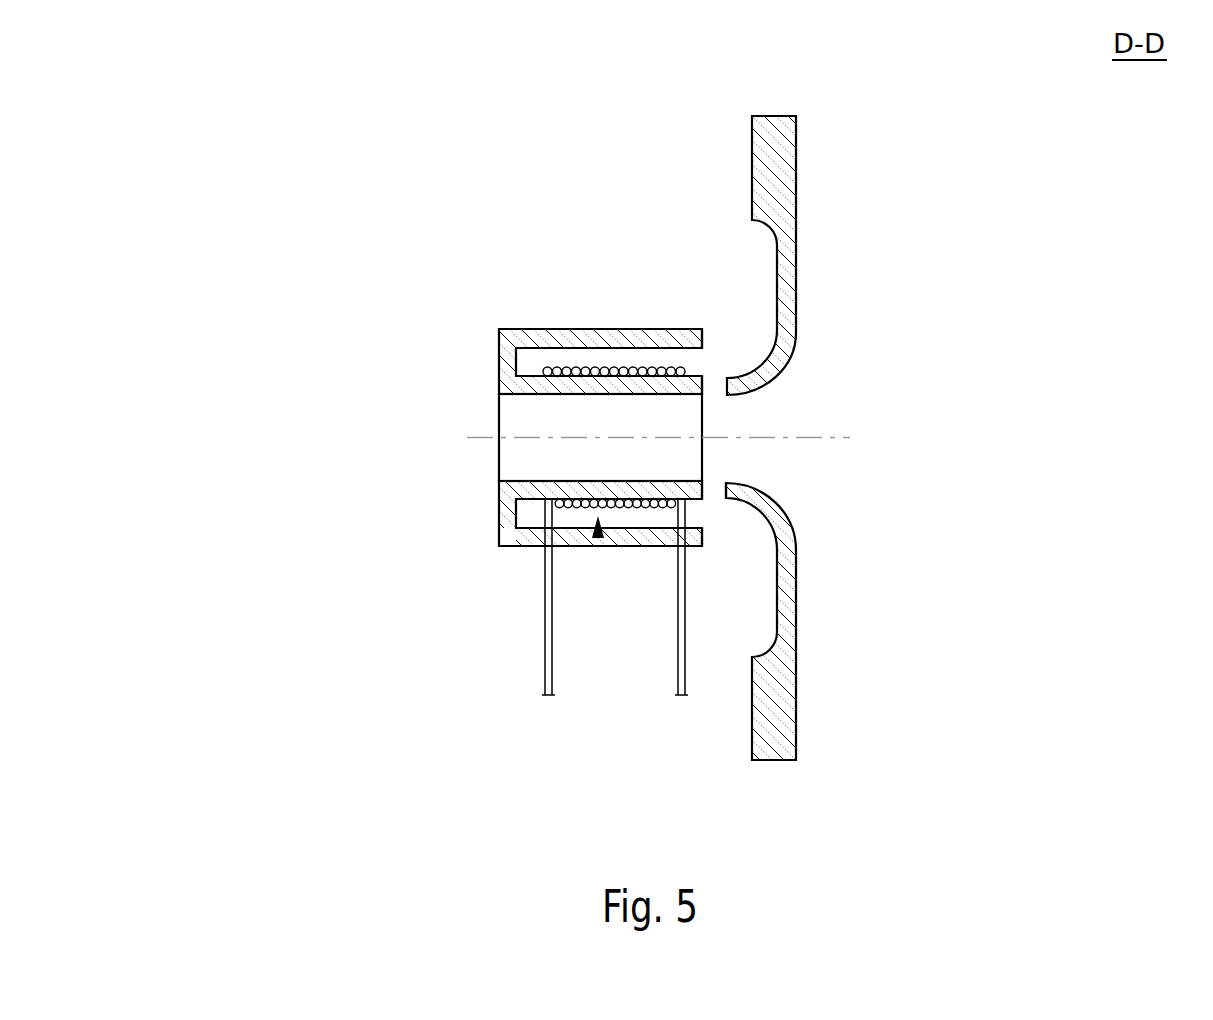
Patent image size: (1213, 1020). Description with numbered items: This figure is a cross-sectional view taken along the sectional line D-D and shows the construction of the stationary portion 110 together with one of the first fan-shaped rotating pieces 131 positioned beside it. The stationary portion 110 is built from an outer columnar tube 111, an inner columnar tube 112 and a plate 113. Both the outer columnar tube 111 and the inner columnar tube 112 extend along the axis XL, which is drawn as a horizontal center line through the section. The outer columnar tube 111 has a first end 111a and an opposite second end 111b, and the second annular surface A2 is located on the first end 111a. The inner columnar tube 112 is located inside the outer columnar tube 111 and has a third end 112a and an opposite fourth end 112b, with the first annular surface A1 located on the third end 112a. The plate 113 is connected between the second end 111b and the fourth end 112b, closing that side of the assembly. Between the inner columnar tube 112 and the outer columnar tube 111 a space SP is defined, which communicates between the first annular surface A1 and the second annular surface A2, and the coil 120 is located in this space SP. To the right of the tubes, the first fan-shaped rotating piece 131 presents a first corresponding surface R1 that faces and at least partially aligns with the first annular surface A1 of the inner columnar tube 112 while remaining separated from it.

The stationary portion 110 is at (243, 645).
The outer columnar tube 111 is at (590, 334).
The first end 111a is at (702, 340).
The second end 111b is at (517, 334).
The inner columnar tube 112 is at (527, 352).
The third end 112a is at (702, 380).
The fourth end 112b is at (518, 352).
The plate 113 is at (503, 364).
The coil 120 is at (640, 504).
The first fan-shaped rotating piece 131 is at (787, 682).
The space SP is at (597, 537).
The axis XL is at (840, 437).
The first annular surface A1 is at (702, 482).
The first corresponding surface R1 is at (725, 497).
The second annular surface A2 is at (702, 538).